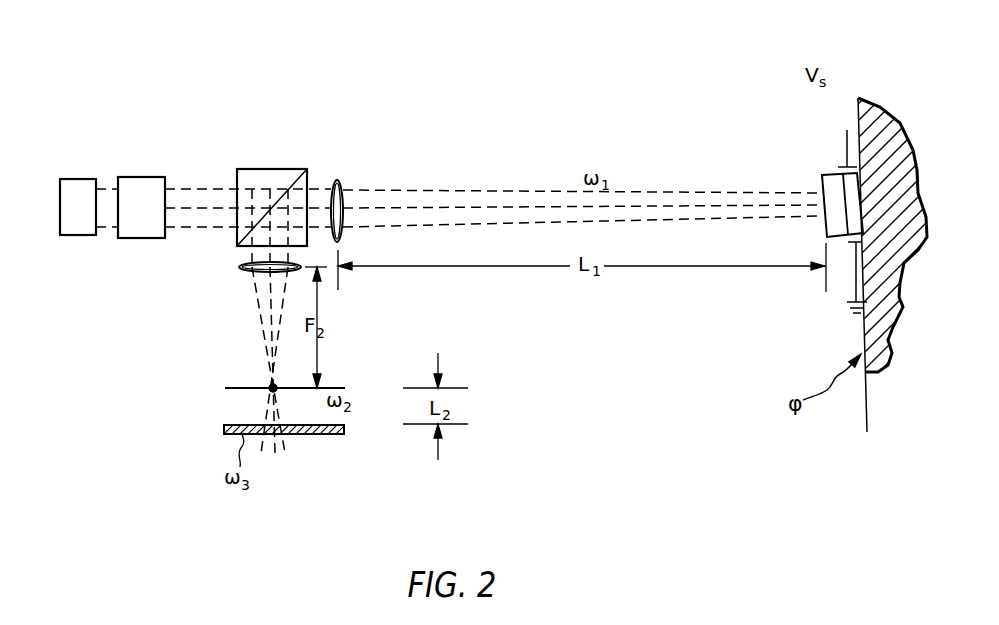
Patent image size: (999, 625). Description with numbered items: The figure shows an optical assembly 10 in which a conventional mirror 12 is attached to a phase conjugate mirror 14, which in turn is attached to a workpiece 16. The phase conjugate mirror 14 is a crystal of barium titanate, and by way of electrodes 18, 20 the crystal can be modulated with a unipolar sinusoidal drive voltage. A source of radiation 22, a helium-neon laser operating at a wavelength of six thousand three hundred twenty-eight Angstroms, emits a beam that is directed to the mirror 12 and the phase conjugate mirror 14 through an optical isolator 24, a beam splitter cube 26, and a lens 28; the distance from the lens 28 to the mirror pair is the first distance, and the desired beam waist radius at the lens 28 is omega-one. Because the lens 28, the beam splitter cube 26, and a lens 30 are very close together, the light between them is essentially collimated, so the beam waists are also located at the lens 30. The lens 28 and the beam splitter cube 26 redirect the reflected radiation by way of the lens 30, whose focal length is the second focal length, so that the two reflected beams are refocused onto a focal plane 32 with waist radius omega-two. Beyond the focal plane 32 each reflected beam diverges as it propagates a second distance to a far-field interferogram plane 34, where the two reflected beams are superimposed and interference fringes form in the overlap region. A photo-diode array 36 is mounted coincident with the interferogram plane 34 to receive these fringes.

The assembly 10 is at (410, 88).
The conventional mirror 12 is at (828, 193).
The phase conjugate mirror 14 is at (852, 188).
The workpiece 16 is at (910, 167).
The electrode 18 is at (847, 148).
The electrode 20 is at (857, 262).
The source of radiation 22 is at (75, 178).
The optical isolator 24 is at (145, 176).
The beam splitter cube 26 is at (282, 168).
The lens 28 is at (342, 178).
The lens 30 is at (239, 270).
The focal plane 32 is at (248, 387).
The far-field interferogram plane 34 is at (243, 425).
The photo-diode array 36 is at (305, 435).